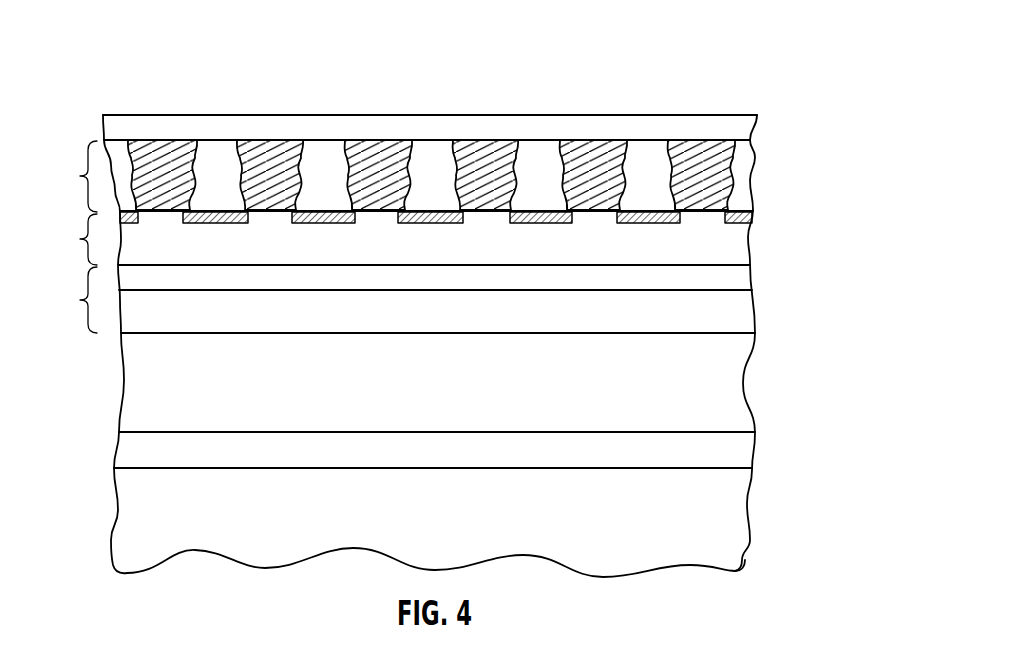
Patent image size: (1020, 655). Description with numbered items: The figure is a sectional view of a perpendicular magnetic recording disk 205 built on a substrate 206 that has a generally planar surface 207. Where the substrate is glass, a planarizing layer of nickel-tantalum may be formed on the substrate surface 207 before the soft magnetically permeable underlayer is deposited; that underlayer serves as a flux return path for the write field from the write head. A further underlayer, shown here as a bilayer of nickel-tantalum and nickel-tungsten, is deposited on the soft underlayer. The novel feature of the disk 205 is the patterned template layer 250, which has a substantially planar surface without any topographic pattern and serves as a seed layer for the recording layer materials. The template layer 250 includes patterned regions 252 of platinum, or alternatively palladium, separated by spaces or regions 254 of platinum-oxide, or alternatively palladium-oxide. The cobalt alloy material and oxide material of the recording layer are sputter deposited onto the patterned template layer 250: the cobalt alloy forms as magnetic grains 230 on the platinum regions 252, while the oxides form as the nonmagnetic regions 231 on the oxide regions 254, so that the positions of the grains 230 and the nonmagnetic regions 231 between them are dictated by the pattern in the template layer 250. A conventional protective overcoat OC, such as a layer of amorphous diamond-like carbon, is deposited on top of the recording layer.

The disk 205 is at (117, 39).
The substrate 206 is at (727, 525).
The planar surface 207 is at (742, 455).
The magnetic grains 230 is at (163, 150).
The nonmagnetic regions 231 is at (213, 152).
The patterned template layer 250 is at (758, 212).
The patterned regions 252 is at (266, 213).
The spaces or regions of Pt-oxide 254 is at (214, 226).
The protective overcoat OC is at (113, 131).